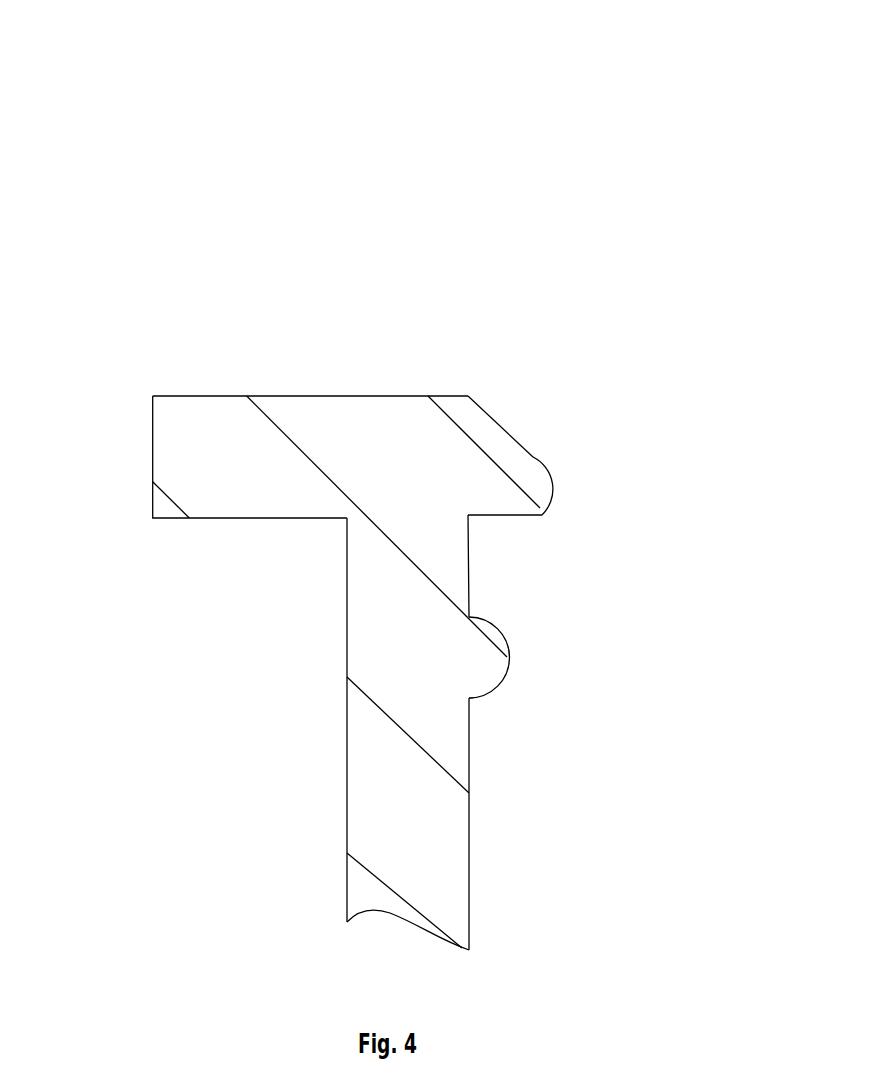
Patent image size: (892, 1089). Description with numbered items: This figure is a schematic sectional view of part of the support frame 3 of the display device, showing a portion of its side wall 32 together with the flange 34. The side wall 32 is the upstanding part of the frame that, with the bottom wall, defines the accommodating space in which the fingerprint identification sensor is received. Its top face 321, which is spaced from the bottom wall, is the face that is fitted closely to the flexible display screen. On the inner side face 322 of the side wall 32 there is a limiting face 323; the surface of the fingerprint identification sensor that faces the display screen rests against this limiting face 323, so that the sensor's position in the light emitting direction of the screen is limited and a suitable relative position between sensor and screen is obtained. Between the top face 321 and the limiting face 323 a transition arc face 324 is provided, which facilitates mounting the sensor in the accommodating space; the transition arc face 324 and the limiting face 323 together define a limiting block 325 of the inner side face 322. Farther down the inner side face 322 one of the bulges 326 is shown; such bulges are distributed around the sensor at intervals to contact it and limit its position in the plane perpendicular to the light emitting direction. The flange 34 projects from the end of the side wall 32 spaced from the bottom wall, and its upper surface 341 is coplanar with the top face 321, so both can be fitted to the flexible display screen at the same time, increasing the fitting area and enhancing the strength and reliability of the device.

The support frame 3 is at (451, 147).
The side wall 32 is at (388, 790).
The flange 34 is at (222, 453).
The top face 321 is at (402, 396).
The inner side face 322 is at (469, 883).
The limiting face 323 is at (500, 513).
The transition arc face 324 is at (522, 430).
The limiting block 325 is at (512, 465).
The bulge 326 is at (482, 668).
The upper surface 341 is at (212, 396).